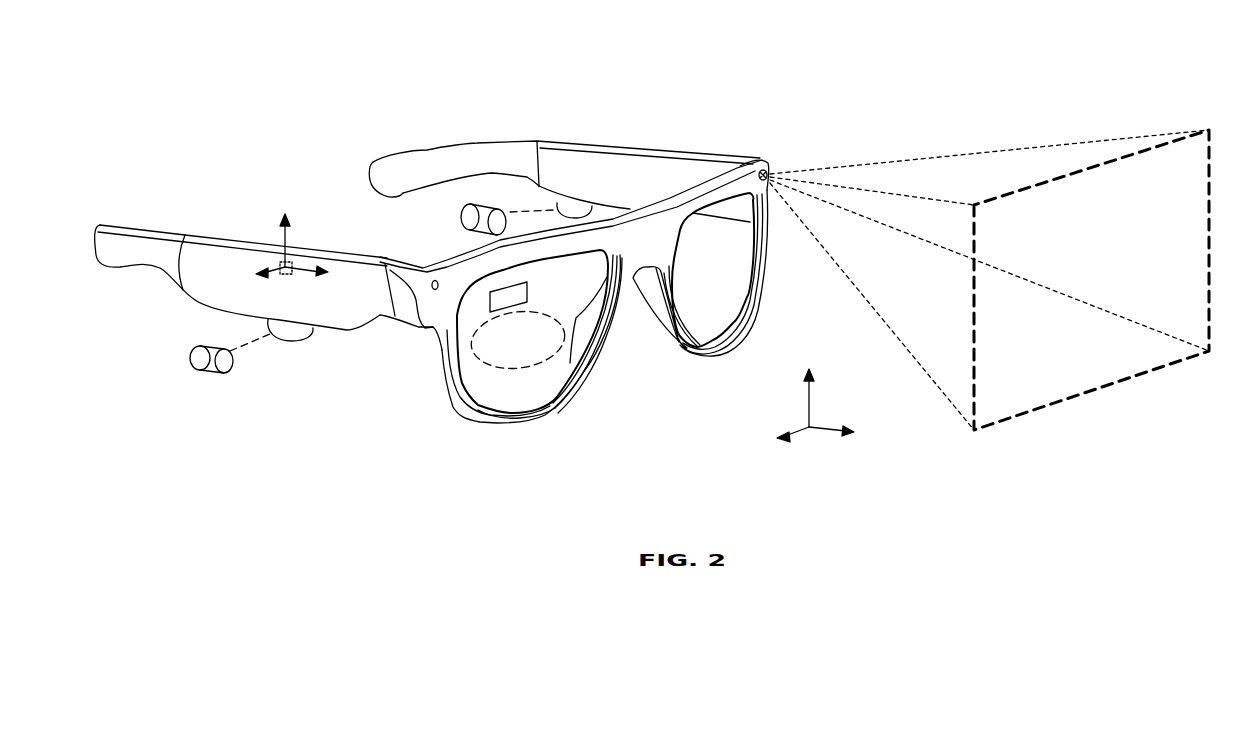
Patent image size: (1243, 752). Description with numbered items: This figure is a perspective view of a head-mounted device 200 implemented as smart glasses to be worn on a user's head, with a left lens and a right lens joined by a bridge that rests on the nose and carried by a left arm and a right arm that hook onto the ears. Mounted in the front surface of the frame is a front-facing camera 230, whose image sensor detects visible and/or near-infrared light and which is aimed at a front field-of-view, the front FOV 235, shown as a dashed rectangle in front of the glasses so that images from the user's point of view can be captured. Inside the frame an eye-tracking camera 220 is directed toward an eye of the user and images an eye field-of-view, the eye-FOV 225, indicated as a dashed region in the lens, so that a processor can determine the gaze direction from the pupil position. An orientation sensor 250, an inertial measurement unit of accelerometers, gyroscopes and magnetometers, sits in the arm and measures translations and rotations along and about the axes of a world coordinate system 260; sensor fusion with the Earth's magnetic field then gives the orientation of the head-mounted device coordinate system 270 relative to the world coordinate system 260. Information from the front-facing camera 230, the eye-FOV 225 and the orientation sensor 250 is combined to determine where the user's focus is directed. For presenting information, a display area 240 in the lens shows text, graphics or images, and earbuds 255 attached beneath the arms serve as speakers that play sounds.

The head-mounted device 200 is at (260, 74).
The eye-tracking camera 220 is at (483, 370).
The eye field-of-view 225 is at (527, 370).
The front-facing camera 230 is at (766, 170).
The front field-of-view 235 is at (1196, 132).
The display area 240 is at (527, 288).
The orientation sensor 250 is at (292, 262).
The earbuds 255 is at (233, 363).
The world coordinate system 260 is at (789, 398).
The head-mounted device coordinate system 270 is at (267, 220).